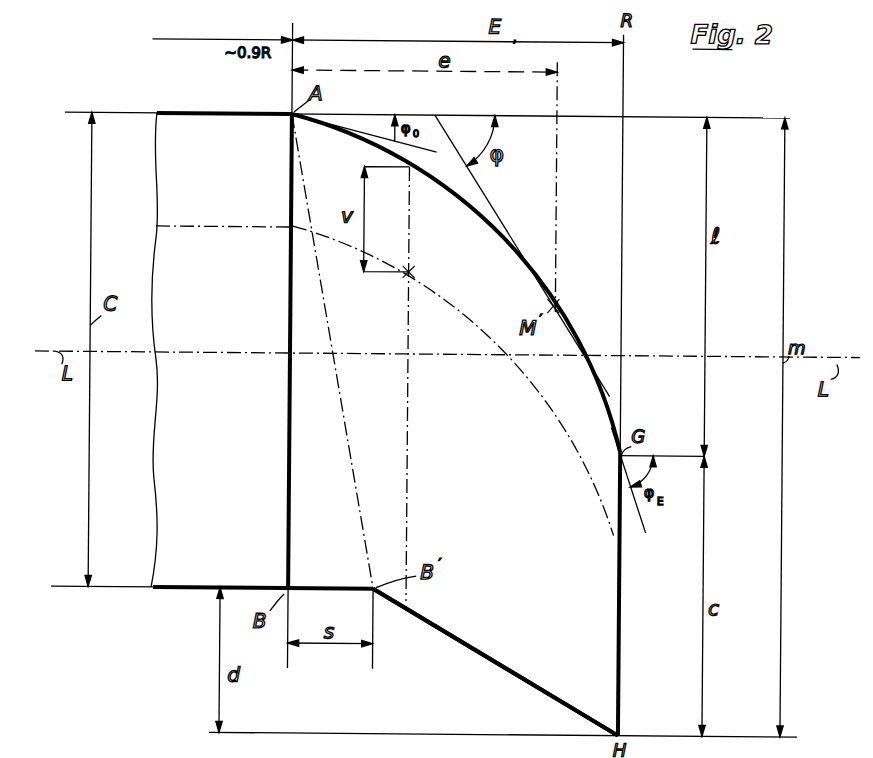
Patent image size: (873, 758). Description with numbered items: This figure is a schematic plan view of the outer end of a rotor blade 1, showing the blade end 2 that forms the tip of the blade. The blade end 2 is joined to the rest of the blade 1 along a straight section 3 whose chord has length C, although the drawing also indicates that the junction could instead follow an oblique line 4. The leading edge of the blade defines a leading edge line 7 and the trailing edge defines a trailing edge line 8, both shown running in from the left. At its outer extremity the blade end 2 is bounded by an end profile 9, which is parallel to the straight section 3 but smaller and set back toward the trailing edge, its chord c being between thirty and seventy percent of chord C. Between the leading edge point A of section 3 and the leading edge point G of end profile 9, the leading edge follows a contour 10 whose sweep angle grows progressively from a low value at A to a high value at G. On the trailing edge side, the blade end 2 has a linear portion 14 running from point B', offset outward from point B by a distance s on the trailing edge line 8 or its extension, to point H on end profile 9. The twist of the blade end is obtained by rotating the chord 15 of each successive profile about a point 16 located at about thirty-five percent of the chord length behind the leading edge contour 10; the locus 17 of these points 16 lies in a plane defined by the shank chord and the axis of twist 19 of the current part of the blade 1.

The blade 1 is at (180, 545).
The blade end 2 is at (506, 608).
The straight section 3 is at (290, 350).
The oblique line 4 is at (350, 433).
The leading edge line 7 is at (216, 112).
The trailing edge line 8 is at (181, 593).
The end profile 9 is at (622, 647).
The contour 10 is at (481, 216).
The linear portion 14 is at (536, 686).
The chord 15 is at (408, 351).
The point 16 is at (412, 268).
The locus 17 is at (556, 425).
The axis of twist 19 is at (218, 230).